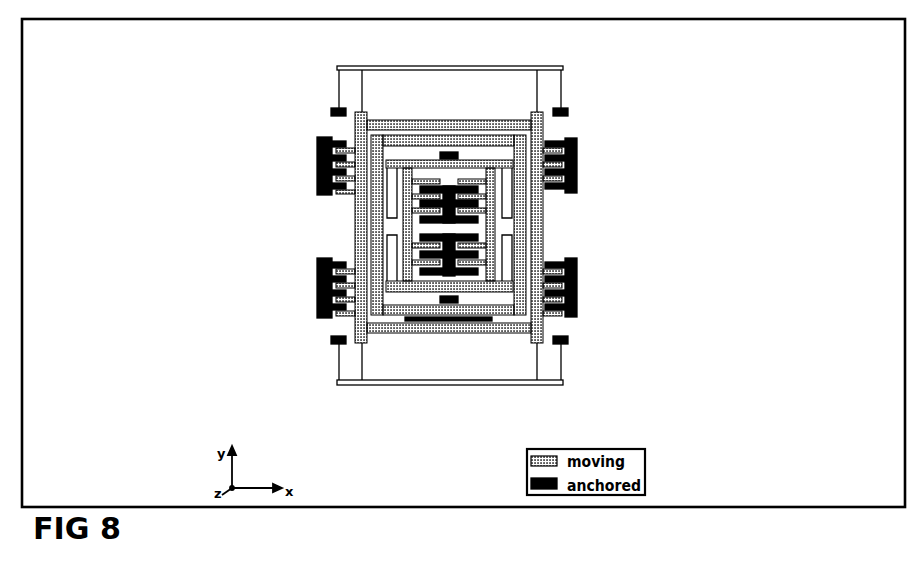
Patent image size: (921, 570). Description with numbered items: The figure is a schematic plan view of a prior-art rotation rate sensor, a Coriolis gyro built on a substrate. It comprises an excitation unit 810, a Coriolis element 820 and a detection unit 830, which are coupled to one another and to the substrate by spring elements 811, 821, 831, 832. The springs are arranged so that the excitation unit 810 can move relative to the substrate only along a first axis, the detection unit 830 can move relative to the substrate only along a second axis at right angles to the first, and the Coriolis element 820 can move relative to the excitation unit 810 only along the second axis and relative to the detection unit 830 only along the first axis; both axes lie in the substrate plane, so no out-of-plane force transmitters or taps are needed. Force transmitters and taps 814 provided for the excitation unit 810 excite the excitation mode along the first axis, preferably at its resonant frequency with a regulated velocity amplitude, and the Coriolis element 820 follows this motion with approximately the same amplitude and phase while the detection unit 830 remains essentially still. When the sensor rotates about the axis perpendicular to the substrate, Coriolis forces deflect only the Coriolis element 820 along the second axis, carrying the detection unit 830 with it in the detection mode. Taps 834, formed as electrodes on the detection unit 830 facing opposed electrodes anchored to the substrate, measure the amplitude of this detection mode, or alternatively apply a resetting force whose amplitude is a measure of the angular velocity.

The excitation unit 810 is at (357, 125).
The spring element 811 is at (362, 363).
The force transmitters and taps 814 is at (318, 279).
The Coriolis element 820 is at (403, 137).
The spring element 821 is at (430, 321).
The detection unit 830 is at (422, 162).
The spring element 831 is at (348, 148).
The spring element 832 is at (447, 153).
The taps 834 is at (420, 192).